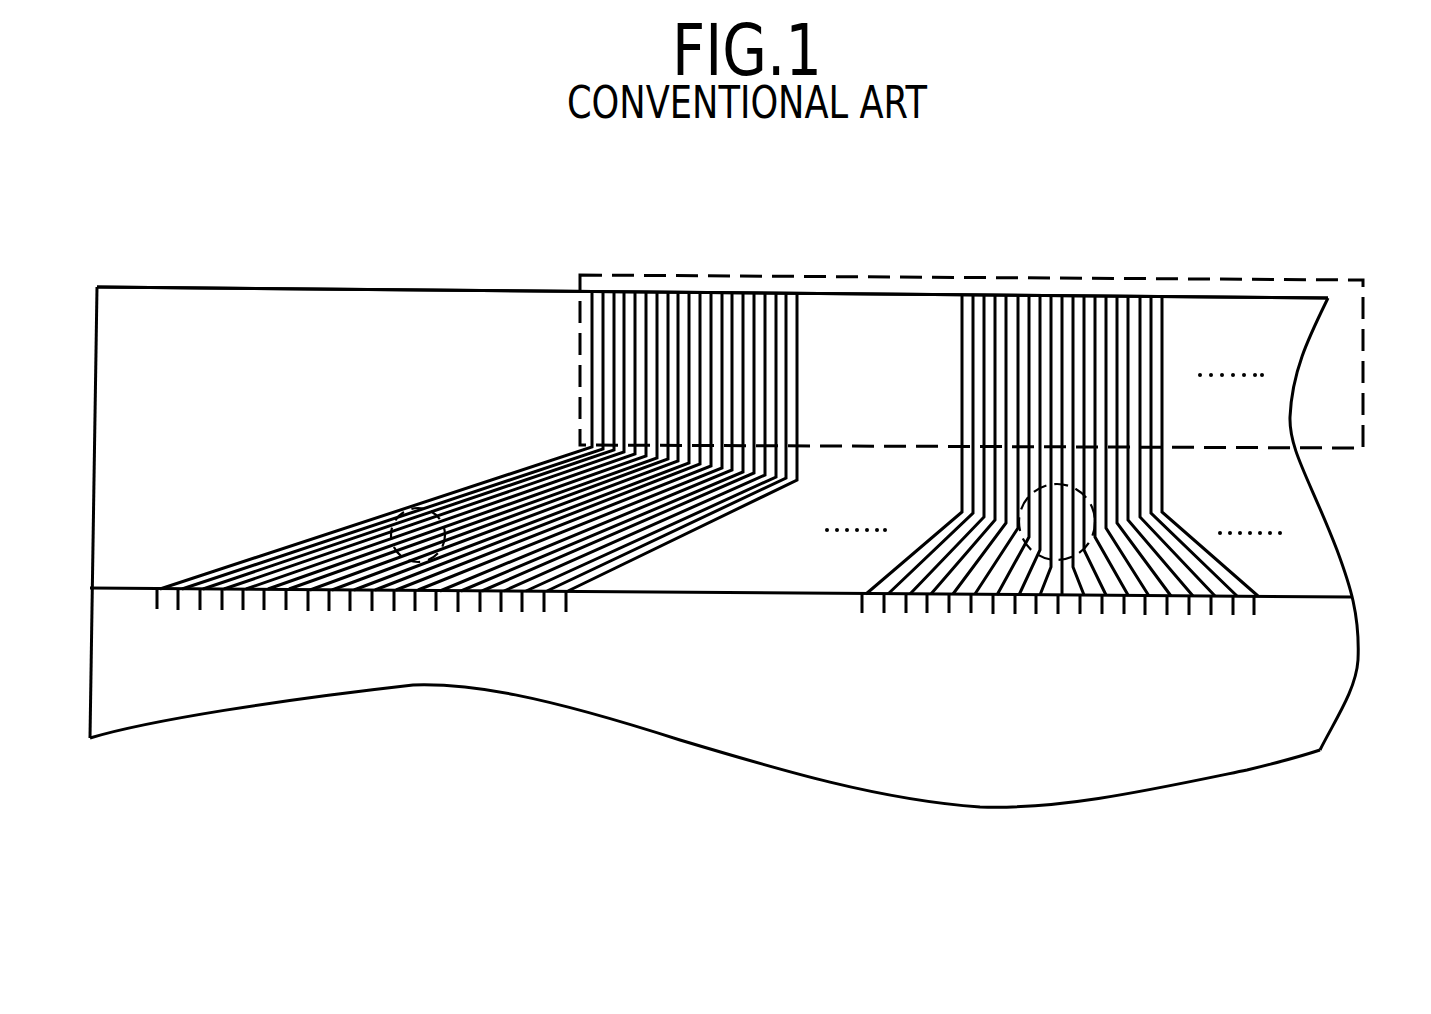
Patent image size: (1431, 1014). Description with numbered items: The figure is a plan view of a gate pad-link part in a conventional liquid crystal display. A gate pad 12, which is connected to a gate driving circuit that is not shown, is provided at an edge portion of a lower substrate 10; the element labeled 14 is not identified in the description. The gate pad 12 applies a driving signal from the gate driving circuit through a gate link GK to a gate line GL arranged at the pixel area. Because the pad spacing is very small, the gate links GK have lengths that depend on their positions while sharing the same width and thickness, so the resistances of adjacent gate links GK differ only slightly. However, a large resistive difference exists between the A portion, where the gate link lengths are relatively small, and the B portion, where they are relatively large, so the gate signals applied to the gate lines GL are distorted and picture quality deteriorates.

The lower substrate 10 is at (470, 290).
The gate pad 12 is at (1366, 281).
The substrate 14 is at (1347, 685).
The gate link GK is at (1163, 485).
The gate line GL is at (1253, 598).
The 'A' portion A is at (1058, 597).
The 'B' portion B is at (407, 509).